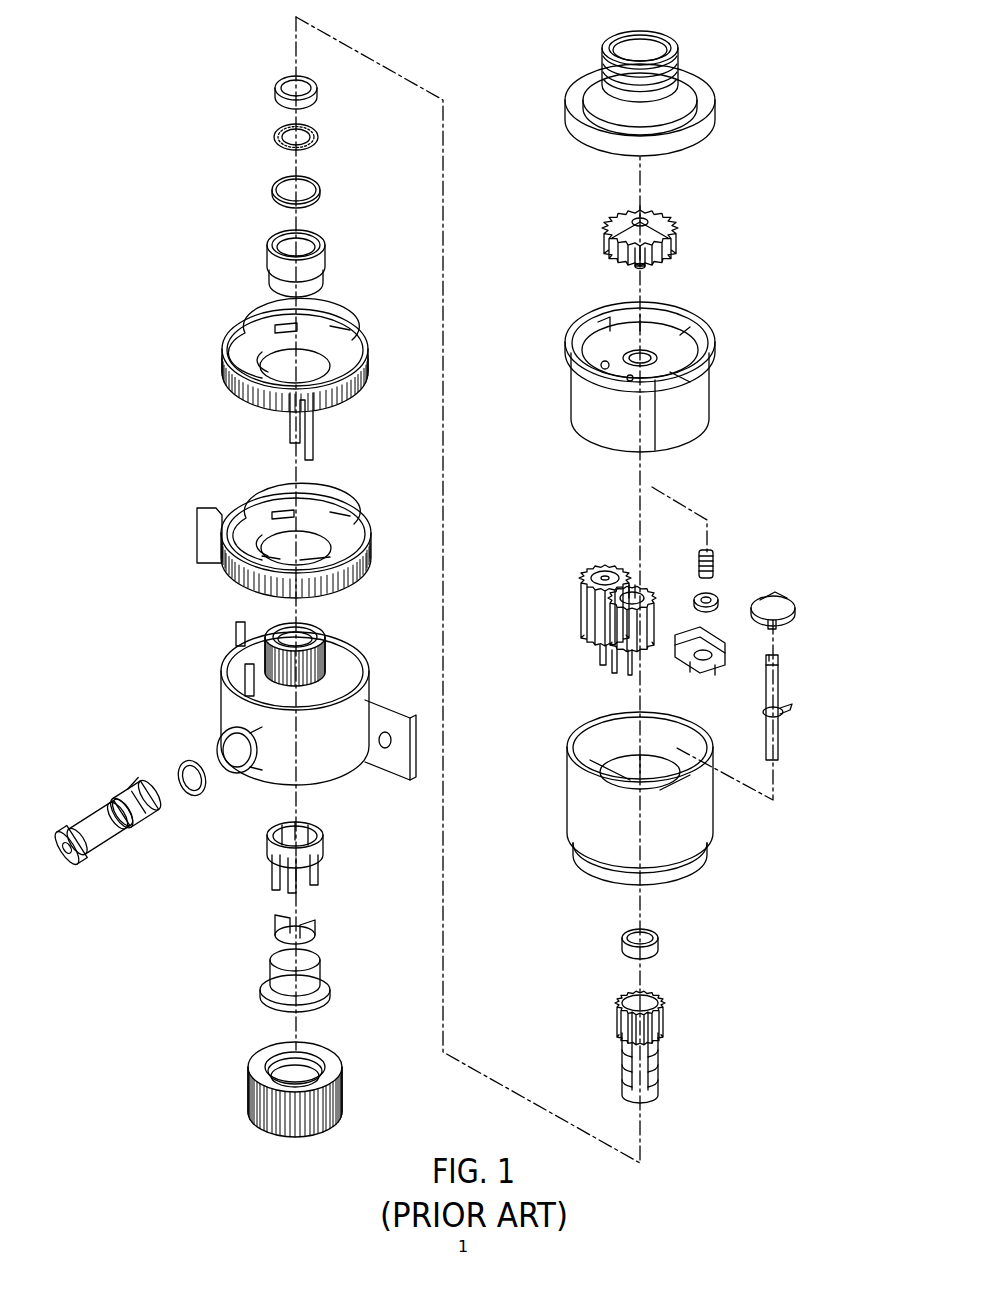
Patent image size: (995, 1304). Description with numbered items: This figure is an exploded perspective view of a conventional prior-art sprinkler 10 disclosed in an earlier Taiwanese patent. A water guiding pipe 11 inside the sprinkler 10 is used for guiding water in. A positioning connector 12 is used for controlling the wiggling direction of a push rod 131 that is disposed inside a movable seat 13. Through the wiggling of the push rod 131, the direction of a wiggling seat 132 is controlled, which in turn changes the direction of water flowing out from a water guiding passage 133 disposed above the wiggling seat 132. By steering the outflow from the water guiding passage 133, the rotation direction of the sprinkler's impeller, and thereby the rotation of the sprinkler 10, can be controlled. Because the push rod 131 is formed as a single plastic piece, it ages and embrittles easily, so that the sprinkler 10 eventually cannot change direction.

The sprinkler 10 is at (710, 241).
The water guiding pipe 11 is at (610, 1058).
The positioning connector 12 is at (195, 563).
The movable seat 13 is at (723, 830).
The push rod 131 is at (800, 713).
The wiggling seat 132 is at (707, 335).
The water guiding passage 133 is at (682, 232).